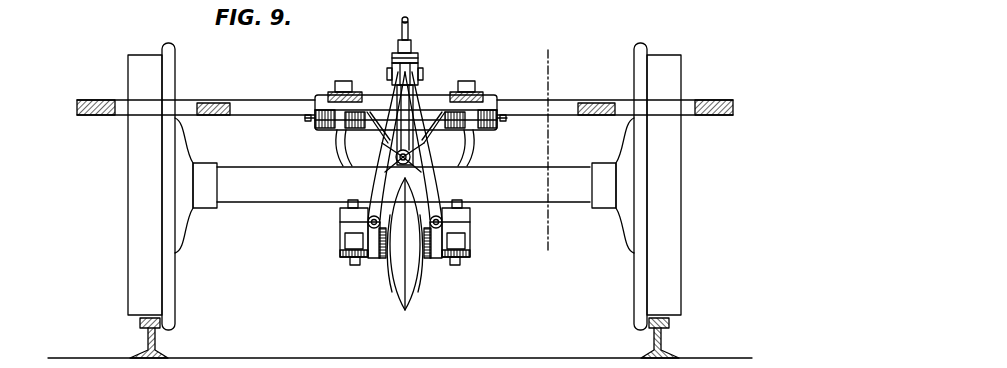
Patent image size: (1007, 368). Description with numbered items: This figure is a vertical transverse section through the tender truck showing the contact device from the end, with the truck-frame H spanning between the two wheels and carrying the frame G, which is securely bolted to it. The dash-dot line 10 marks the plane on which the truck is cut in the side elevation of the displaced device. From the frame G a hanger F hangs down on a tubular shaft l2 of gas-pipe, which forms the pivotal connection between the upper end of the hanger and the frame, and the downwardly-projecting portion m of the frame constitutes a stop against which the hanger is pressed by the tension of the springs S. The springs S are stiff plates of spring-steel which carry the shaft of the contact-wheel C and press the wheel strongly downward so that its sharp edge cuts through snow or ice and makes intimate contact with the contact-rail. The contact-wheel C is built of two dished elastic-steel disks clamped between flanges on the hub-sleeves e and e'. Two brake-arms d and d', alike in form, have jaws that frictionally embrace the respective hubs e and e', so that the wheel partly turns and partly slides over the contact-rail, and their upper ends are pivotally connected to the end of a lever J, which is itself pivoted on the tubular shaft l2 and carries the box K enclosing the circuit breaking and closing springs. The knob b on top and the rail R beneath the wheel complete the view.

The knob on operating rod b is at (396, 35).
The box K is at (392, 57).
The lever J is at (420, 72).
The frame G is at (372, 145).
The hanger F is at (470, 146).
The tubular shaft l2 is at (306, 118).
The brake-arm d' is at (377, 165).
The downwardly-projecting portion m is at (404, 135).
The brake-arm d is at (431, 165).
The hub-sleeve e' is at (372, 252).
The hub-sleeve e is at (433, 251).
The spring S is at (345, 262).
The contact-wheel C is at (394, 290).
The truck-frame H is at (587, 100).
The rail R is at (639, 200).
The section line 10- 10 is at (548, 154).